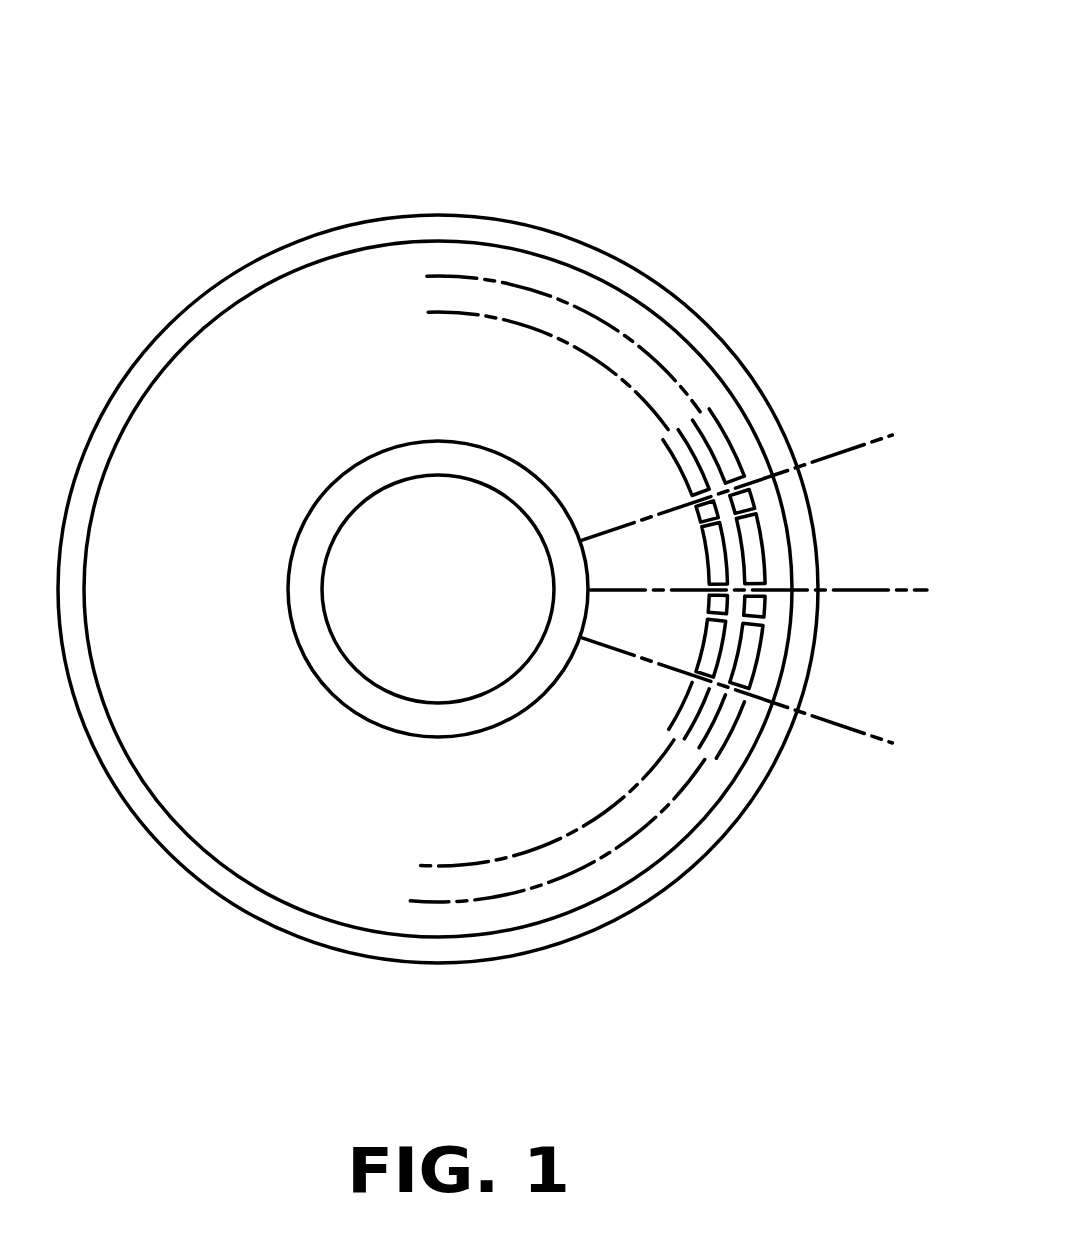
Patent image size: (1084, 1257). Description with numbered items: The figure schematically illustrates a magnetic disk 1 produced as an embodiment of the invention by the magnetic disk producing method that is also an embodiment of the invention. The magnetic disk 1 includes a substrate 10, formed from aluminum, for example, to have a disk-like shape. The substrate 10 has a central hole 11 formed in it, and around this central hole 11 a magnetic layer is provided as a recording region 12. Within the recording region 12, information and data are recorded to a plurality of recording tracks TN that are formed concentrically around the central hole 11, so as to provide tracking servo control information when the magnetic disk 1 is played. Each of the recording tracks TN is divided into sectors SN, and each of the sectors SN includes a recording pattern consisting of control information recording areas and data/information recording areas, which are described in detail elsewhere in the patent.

The magnetic disk 1 is at (532, 158).
The substrate 10 is at (428, 215).
The central hole 11 is at (385, 683).
The recording region 12 is at (222, 340).
The recording tracks TN is at (727, 462).
The sectors SN is at (880, 739).